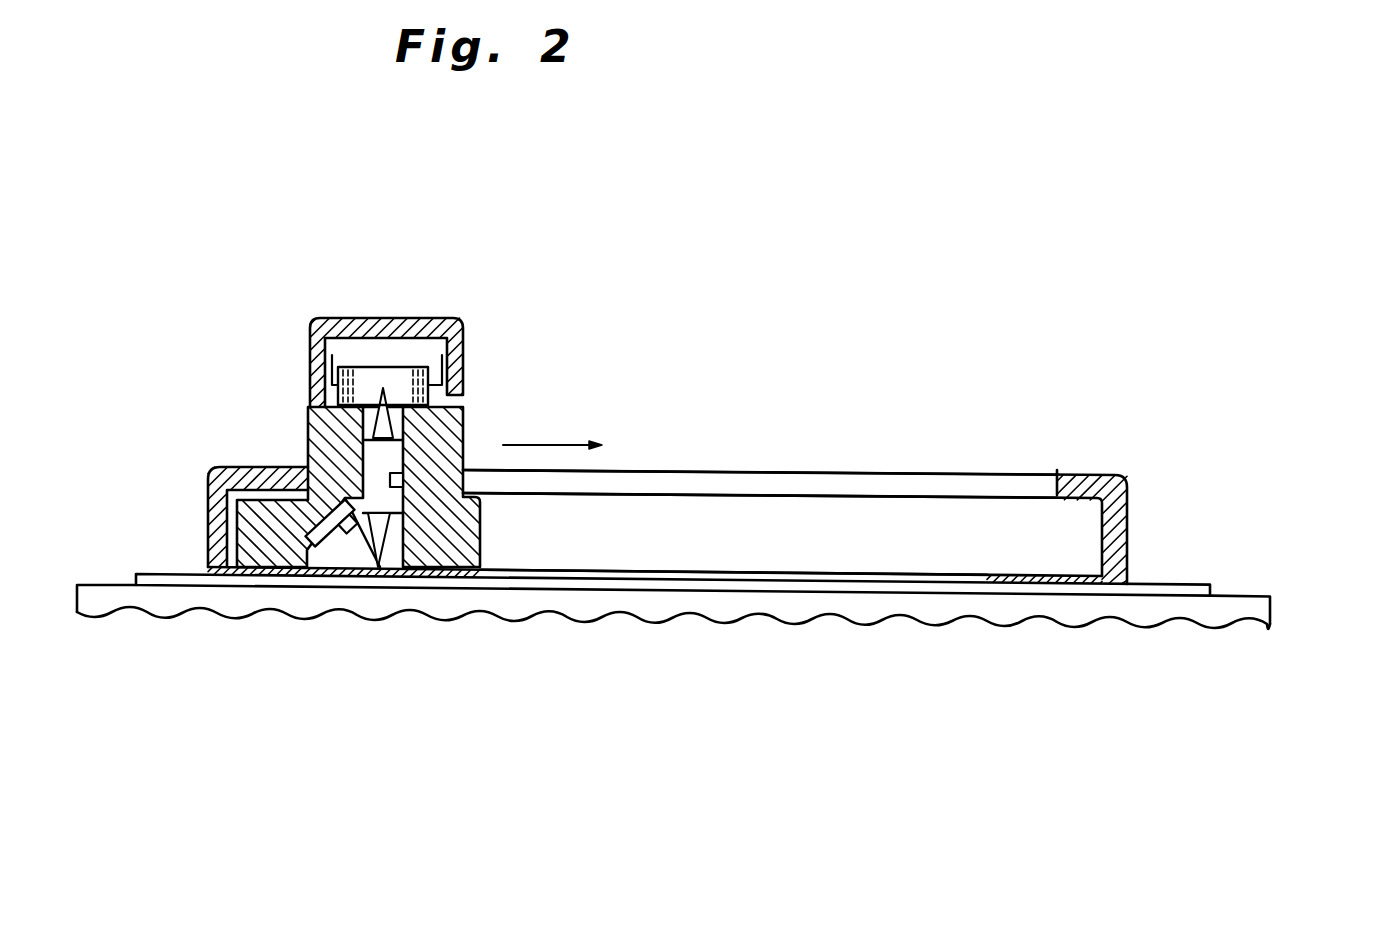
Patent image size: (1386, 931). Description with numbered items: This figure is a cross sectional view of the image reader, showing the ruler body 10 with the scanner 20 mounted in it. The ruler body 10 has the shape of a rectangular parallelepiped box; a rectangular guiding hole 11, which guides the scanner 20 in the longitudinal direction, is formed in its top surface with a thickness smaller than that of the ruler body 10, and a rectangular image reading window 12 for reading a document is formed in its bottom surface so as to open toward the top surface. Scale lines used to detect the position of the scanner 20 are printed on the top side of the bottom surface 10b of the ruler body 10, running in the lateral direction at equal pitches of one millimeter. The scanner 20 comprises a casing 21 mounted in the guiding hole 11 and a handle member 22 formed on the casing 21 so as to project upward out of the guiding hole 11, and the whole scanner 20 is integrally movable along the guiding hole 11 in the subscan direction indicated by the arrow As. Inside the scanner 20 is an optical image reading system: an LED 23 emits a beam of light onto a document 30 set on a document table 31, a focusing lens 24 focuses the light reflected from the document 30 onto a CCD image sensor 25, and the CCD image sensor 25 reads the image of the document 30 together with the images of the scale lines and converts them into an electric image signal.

The ruler body 10 is at (750, 468).
The bottom surface of the ruler body 10b is at (1025, 578).
The guiding hole 11 is at (925, 485).
The image reading window 12 is at (833, 574).
The scanner 20 is at (300, 414).
The casing 21 is at (446, 435).
The handle member 22 is at (407, 328).
The LED 23 is at (338, 545).
The focusing lens 24 is at (380, 455).
The CCD image sensor 25 is at (367, 380).
The document 30 is at (1175, 585).
The document table 31 is at (1243, 608).
The arrow indicating the subscan direction As is at (580, 408).